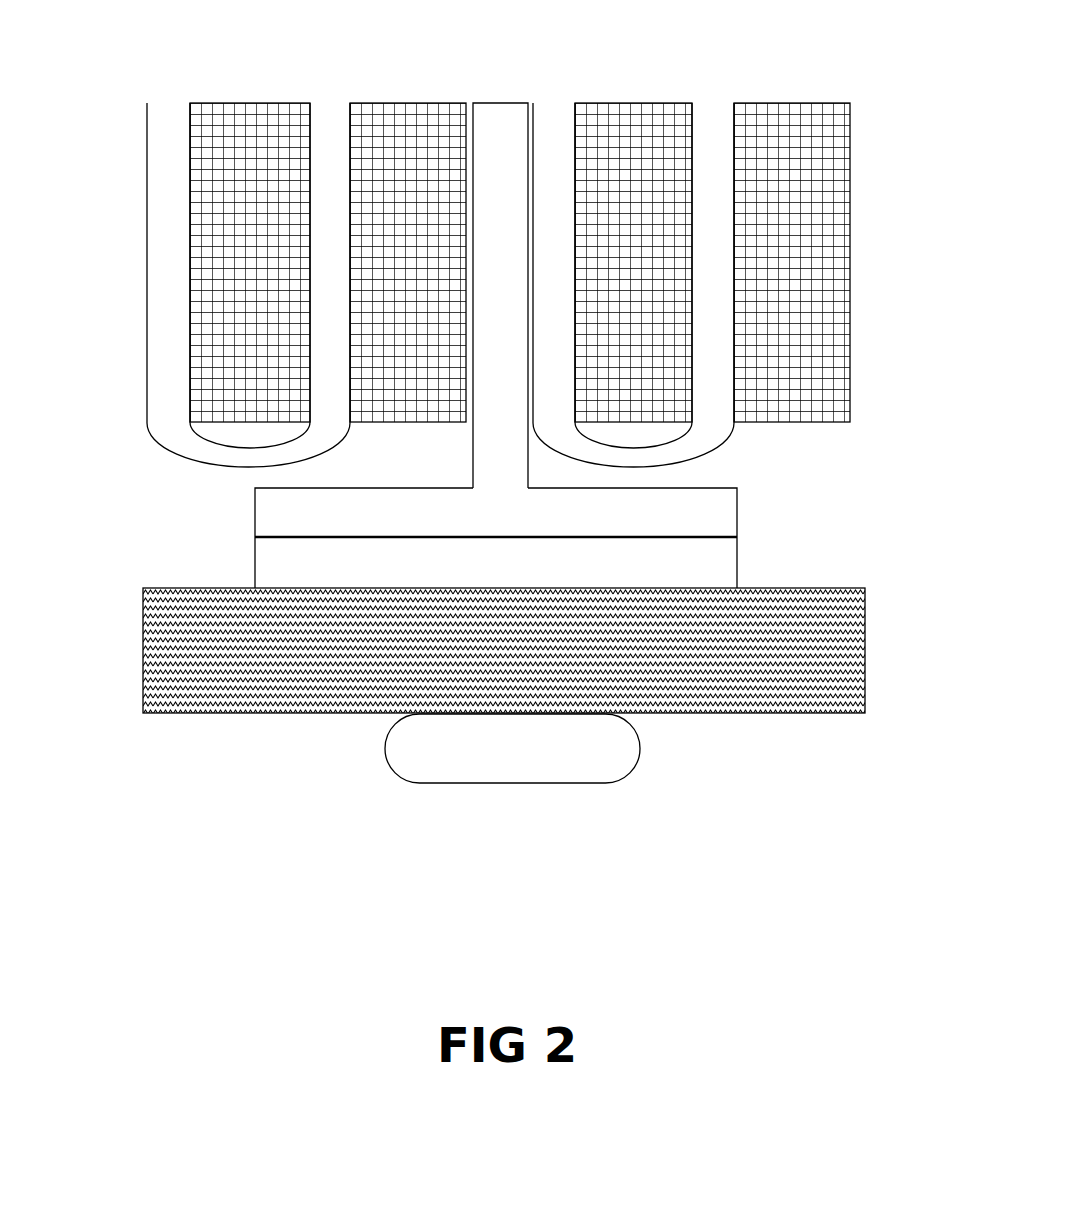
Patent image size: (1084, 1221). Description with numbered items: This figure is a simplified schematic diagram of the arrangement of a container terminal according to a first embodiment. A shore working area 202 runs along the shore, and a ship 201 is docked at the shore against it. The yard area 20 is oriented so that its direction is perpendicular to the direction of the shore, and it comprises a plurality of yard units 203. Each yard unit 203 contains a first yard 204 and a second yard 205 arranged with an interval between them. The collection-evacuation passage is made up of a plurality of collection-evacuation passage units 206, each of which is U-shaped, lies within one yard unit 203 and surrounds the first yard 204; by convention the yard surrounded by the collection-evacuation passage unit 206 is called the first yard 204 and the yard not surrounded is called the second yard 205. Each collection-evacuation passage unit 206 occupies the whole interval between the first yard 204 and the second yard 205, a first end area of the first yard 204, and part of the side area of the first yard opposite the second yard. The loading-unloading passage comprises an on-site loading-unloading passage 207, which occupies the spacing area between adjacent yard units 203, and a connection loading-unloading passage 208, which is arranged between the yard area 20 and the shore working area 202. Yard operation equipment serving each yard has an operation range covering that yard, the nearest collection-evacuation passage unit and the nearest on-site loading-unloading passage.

The yard area 20 is at (884, 226).
The ship 201 is at (545, 770).
The shore working area 202 is at (850, 635).
The yard unit 203 is at (776, 96).
The first yard 204 is at (257, 112).
The second yard 205 is at (400, 112).
The collection-evacuation passage unit 206 is at (163, 163).
The on-site loading-unloading passage 207 is at (502, 113).
The connection loading-unloading passage 208 is at (740, 508).